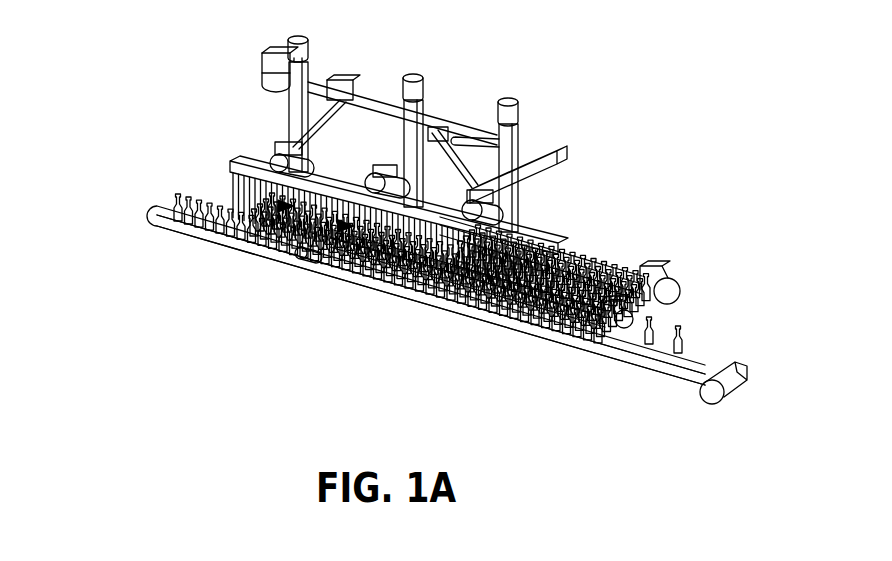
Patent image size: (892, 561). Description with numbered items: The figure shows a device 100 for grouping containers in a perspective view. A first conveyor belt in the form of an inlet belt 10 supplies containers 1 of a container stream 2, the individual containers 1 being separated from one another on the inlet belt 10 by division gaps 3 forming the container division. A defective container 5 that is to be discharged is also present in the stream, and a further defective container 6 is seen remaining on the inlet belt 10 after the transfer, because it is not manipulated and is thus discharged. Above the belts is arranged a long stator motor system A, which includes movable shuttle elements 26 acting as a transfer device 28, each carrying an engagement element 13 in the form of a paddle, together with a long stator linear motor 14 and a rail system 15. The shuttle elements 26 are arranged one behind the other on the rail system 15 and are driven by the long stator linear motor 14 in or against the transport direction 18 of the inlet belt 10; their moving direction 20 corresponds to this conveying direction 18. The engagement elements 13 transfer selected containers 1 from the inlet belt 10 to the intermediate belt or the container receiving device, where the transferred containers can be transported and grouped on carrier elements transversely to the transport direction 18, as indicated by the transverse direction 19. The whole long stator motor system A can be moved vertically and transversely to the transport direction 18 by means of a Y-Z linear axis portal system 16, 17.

The device for grouping containers 100 is at (123, 106).
The container 1 is at (347, 256).
The container stream 2 is at (175, 196).
The division gap 3 is at (177, 234).
The defective container 5 is at (247, 236).
The defective container remaining on inlet belt 6 is at (630, 348).
The inlet belt 10 is at (148, 214).
The engagement element 13 is at (231, 162).
The long stator linear motor 14 is at (338, 117).
The rail system 15 is at (252, 150).
The portal system 16 is at (544, 177).
The portal system 17 is at (289, 45).
The transport direction 18 is at (430, 327).
The transverse transport direction 19 is at (753, 269).
The moving direction of shuttle elements 20 is at (283, 248).
The shuttle element 26 is at (232, 177).
The transfer device 28 is at (230, 193).
The long stator motor system A is at (340, 178).